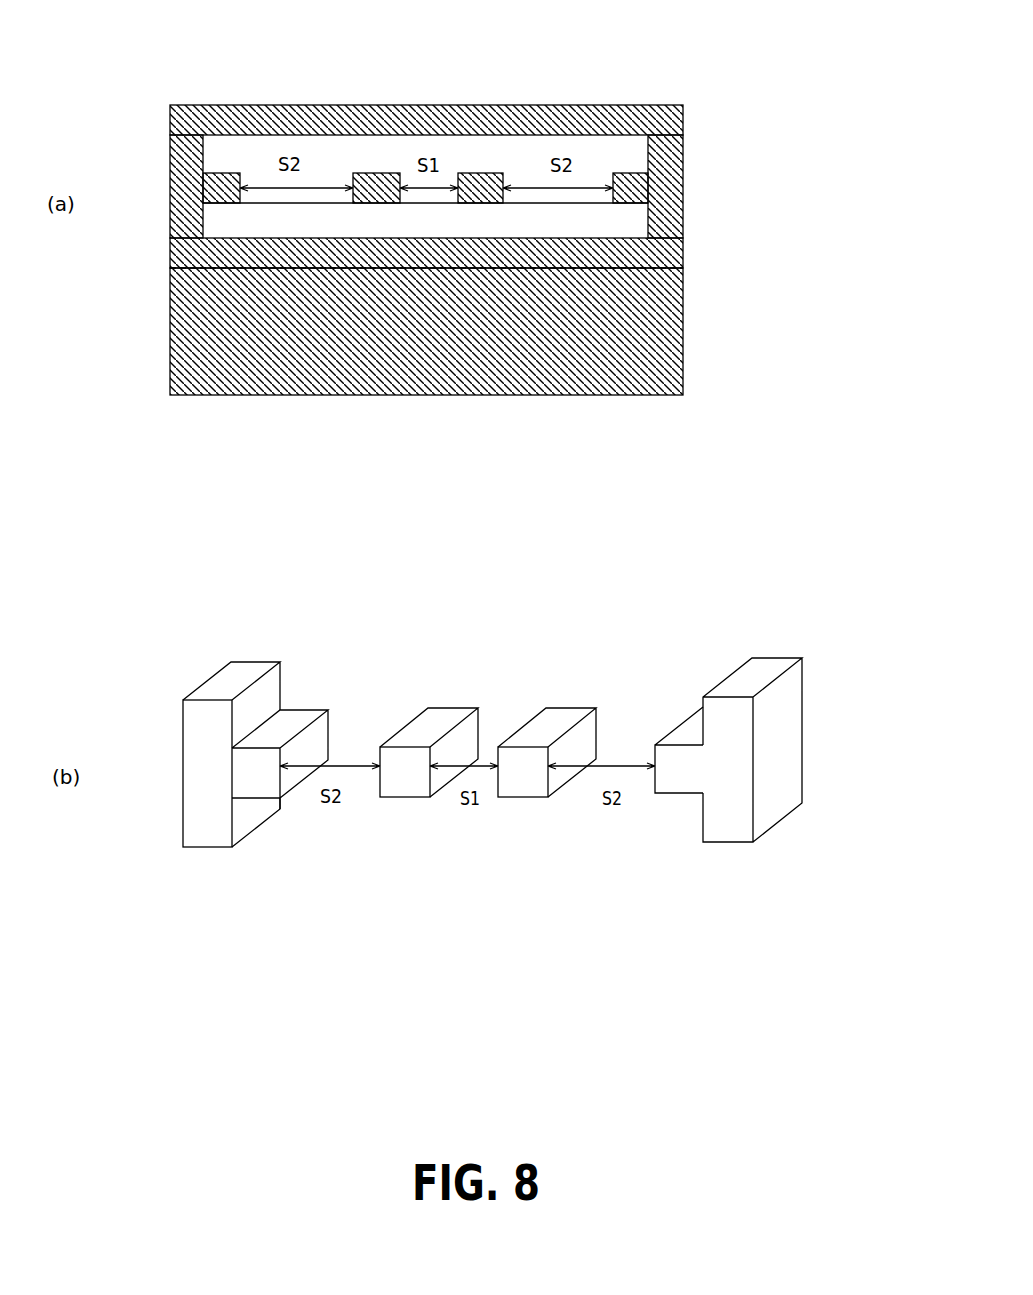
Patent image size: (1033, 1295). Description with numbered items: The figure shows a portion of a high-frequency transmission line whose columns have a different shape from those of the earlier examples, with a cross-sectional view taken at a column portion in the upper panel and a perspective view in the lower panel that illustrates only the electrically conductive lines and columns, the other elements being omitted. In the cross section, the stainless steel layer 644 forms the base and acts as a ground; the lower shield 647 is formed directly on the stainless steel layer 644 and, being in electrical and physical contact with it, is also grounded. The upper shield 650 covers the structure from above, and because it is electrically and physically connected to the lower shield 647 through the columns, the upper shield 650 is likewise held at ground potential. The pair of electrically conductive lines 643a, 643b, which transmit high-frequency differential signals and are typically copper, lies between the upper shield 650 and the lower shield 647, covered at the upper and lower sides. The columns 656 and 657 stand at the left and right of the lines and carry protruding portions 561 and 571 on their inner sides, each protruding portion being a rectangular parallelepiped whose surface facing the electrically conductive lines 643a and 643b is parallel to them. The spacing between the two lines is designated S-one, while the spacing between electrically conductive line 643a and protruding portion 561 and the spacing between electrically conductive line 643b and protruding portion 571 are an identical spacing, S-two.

The protruding portion 561 is at (219, 173).
The protruding portion 571 is at (619, 172).
The electrically conductive line 643a is at (377, 173).
The electrically conductive line 643b is at (472, 172).
The stainless steel layer 644 is at (683, 337).
The lower shield 647 is at (683, 240).
The upper shield 650 is at (683, 106).
The column 656 is at (170, 186).
The column 657 is at (685, 180).